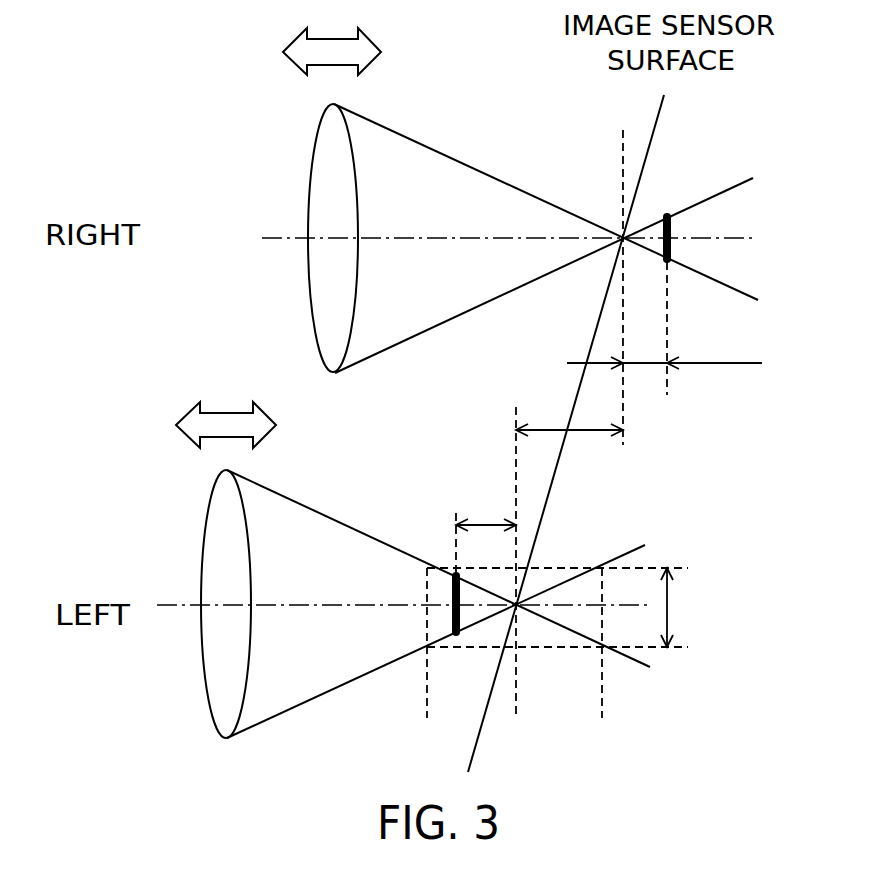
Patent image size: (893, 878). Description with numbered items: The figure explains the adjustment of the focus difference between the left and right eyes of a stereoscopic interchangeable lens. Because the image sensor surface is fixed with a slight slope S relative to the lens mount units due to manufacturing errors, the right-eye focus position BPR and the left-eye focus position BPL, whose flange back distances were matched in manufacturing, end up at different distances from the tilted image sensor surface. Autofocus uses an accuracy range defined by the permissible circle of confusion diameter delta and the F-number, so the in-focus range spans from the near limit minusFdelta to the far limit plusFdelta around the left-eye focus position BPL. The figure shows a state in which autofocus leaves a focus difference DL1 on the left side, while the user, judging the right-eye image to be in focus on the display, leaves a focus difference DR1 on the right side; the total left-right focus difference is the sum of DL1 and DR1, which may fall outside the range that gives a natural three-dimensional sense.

The right-eye focus difference DR1 is at (664, 306).
The right-eye focus position BPR is at (629, 303).
The slope of the image sensor surface S is at (569, 417).
The left-eye focus position BPL is at (526, 586).
The left-eye focus difference DL1 is at (486, 556).
The permissible circle of confusion diameter delta is at (560, 607).
The near limit of the AF accuracy range minusFdelta is at (420, 666).
The far limit of the AF accuracy range plusFdelta is at (610, 666).